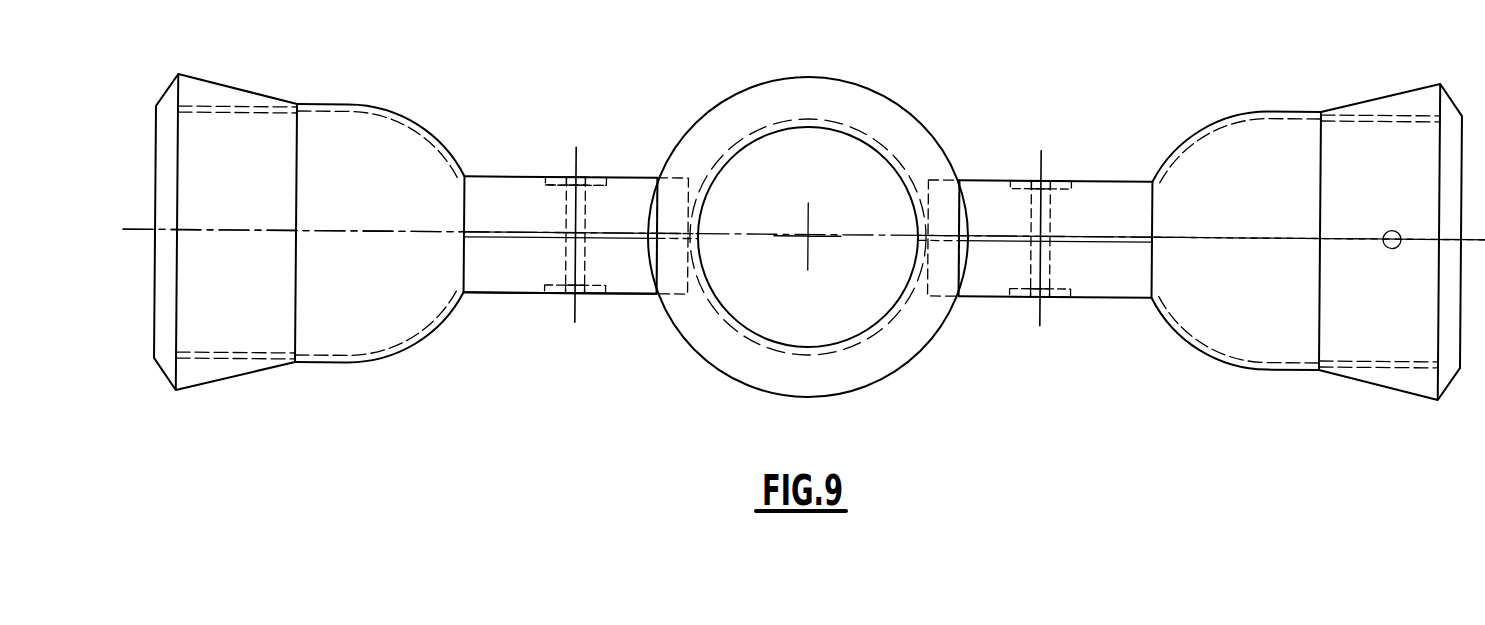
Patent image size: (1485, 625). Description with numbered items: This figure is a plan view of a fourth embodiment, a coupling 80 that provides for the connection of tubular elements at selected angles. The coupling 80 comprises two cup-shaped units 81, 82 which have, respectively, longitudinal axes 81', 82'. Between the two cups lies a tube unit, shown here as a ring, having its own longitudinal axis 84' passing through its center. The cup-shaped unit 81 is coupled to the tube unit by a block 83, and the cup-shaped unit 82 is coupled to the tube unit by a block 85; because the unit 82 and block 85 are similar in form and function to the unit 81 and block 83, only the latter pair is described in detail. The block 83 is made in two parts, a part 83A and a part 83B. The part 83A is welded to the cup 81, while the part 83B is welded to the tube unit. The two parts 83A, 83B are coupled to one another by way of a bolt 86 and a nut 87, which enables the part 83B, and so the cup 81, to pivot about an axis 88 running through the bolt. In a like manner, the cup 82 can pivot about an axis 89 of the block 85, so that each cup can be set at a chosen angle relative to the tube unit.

The coupling 80 is at (888, 375).
The cup-shaped unit 81 is at (310, 222).
The longitudinal axis 81' is at (291, 202).
The cup-shaped unit 82 is at (1306, 241).
The longitudinal axis 82' is at (1320, 221).
The block 83 is at (484, 190).
The block part 83A is at (508, 267).
The block part 83B is at (528, 188).
The longitudinal axis 84' is at (759, 174).
The block 85 is at (1080, 193).
The bolt 86 is at (582, 298).
The nut 87 is at (612, 189).
The axis 88 is at (575, 252).
The axis 89 is at (1082, 297).